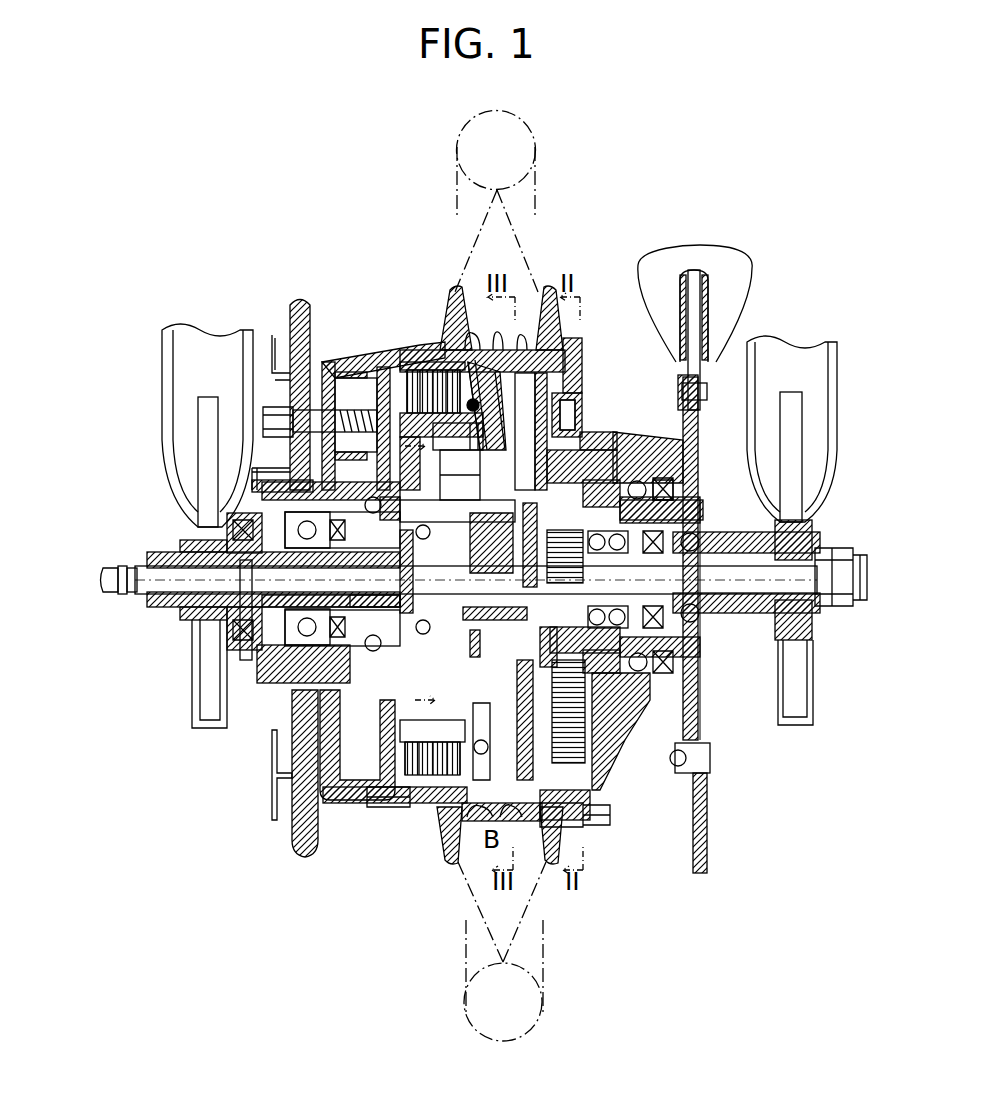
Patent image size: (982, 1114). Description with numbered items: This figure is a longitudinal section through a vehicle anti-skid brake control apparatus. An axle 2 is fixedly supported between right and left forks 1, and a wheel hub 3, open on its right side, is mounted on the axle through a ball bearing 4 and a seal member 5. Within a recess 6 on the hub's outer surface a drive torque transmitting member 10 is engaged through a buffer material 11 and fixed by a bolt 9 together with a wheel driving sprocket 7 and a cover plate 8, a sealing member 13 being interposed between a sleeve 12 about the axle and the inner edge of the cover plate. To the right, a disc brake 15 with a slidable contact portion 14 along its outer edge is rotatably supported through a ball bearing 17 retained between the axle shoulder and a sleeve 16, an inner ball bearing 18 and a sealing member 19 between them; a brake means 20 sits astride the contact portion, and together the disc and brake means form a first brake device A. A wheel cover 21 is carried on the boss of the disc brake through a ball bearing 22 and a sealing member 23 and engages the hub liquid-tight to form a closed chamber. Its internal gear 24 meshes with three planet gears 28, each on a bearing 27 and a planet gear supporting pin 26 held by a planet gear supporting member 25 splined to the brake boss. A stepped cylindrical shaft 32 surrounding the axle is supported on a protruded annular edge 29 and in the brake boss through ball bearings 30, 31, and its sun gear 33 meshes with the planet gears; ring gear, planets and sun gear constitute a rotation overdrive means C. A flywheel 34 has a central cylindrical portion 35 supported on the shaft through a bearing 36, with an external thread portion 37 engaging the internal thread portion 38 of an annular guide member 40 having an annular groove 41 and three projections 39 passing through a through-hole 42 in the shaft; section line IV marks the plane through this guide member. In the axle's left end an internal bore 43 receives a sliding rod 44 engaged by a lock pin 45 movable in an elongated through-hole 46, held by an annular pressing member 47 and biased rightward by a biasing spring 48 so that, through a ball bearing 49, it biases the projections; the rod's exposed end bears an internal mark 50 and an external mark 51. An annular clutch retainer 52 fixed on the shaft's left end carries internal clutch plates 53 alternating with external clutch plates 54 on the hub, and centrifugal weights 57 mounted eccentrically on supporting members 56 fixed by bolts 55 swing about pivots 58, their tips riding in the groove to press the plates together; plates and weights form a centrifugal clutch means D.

The fork 1 is at (162, 432).
The axle 2 is at (770, 598).
The wheel hub 3 is at (378, 348).
The ball bearing 4 is at (292, 562).
The seal member 5 is at (340, 594).
The recess 6 is at (360, 362).
The wheel driving sprocket 7 is at (298, 300).
The cover plate 8 is at (273, 335).
The bolt 9 is at (265, 432).
The drive torque transmitting member 10 is at (340, 365).
The buffer material 11 is at (352, 372).
The sleeve 12 is at (232, 538).
The sealing member 13 is at (242, 513).
The slidable contact portion 14 is at (700, 380).
The disc brake 15 is at (698, 436).
The sleeve 16 is at (775, 540).
The ball bearing 17 is at (690, 560).
The ball bearing 18 is at (630, 553).
The sealing member 19 is at (660, 553).
The brake means 20 is at (690, 247).
The wheel cover 21 is at (632, 460).
The ball bearing 22 is at (610, 660).
The sealing member 23 is at (673, 488).
The internal gear 24 is at (575, 360).
The planet gear supporting member 25 is at (598, 440).
The planet gear supporting pin 26 is at (605, 465).
The bearing 27 is at (568, 420).
The planet gear 28 is at (575, 398).
The protruded annular edge 29 is at (372, 525).
The ball bearing 30 is at (358, 515).
The ball bearing 31 is at (615, 560).
The stepped cylindrical shaft 32 is at (547, 545).
The sun gear 33 is at (618, 665).
The flywheel 34 is at (538, 350).
The central cylindrical portion 35 is at (480, 575).
The bearing 36 is at (492, 680).
The external thread portion 37 is at (528, 530).
The internal thread portion 38 is at (520, 490).
The projection 39 is at (388, 497).
The annular guide member 40 is at (470, 450).
The annular groove 41 is at (491, 543).
The through-hole 42 is at (420, 465).
The internal bore 43 is at (257, 660).
The sliding rod 44 is at (108, 570).
The lock pin 45 is at (420, 550).
The through-hole 46 is at (470, 620).
The annular pressing member 47 is at (372, 672).
The biasing spring 48 is at (382, 596).
The ball bearing 49 is at (433, 720).
The internal mark 50 is at (133, 596).
The external mark 51 is at (121, 596).
The annular clutch retainer 52 is at (400, 470).
The internal clutch plate 53 is at (400, 402).
The external clutch plate 54 is at (420, 362).
The bolt 55 is at (437, 372).
The supporting member 56 is at (455, 420).
The centrifugal weight 57 is at (498, 360).
The pivot 58 is at (472, 360).
The first brake device A is at (711, 704).
The rotation overdrive means C is at (666, 770).
The centrifugal clutch means D is at (450, 360).
The section IV is at (420, 586).